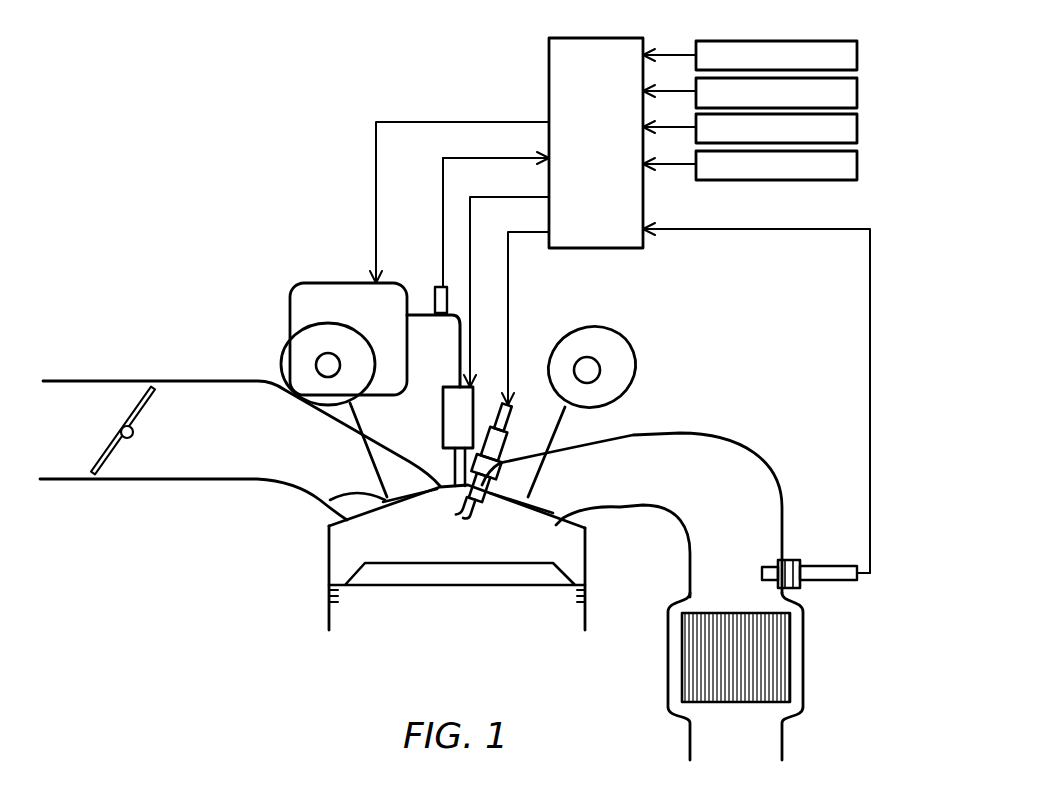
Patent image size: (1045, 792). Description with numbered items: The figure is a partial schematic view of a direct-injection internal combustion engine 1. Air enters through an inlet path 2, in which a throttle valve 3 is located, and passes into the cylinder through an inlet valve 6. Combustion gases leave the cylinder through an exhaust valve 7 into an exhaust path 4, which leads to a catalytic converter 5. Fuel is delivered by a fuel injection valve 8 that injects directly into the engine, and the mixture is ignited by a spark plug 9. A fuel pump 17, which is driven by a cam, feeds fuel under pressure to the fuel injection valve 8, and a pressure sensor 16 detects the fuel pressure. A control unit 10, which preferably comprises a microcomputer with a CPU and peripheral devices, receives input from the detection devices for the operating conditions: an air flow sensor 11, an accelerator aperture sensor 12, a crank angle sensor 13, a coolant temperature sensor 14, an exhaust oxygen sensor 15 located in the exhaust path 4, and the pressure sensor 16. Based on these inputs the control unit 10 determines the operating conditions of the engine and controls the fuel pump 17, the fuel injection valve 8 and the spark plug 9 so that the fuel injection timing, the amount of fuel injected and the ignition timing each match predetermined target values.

The internal combustion engine 1 is at (305, 612).
The inlet path 2 is at (155, 462).
The throttle valve 3 is at (134, 405).
The exhaust path 4 is at (753, 523).
The catalytic converter 5 is at (780, 667).
The inlet valve 6 is at (330, 500).
The exhaust valve 7 is at (548, 508).
The fuel injection valve 8 is at (443, 412).
The spark plug 9 is at (525, 428).
The control unit 10 is at (556, 68).
The air flow sensor 11 is at (857, 55).
The accelerator aperture sensor 12 is at (857, 82).
The crank angle sensor 13 is at (857, 127).
The coolant temperature sensor 14 is at (857, 170).
The exhaust oxygen sensor 15 is at (830, 577).
The pressure sensor 16 is at (433, 288).
The fuel pump 17 is at (330, 297).